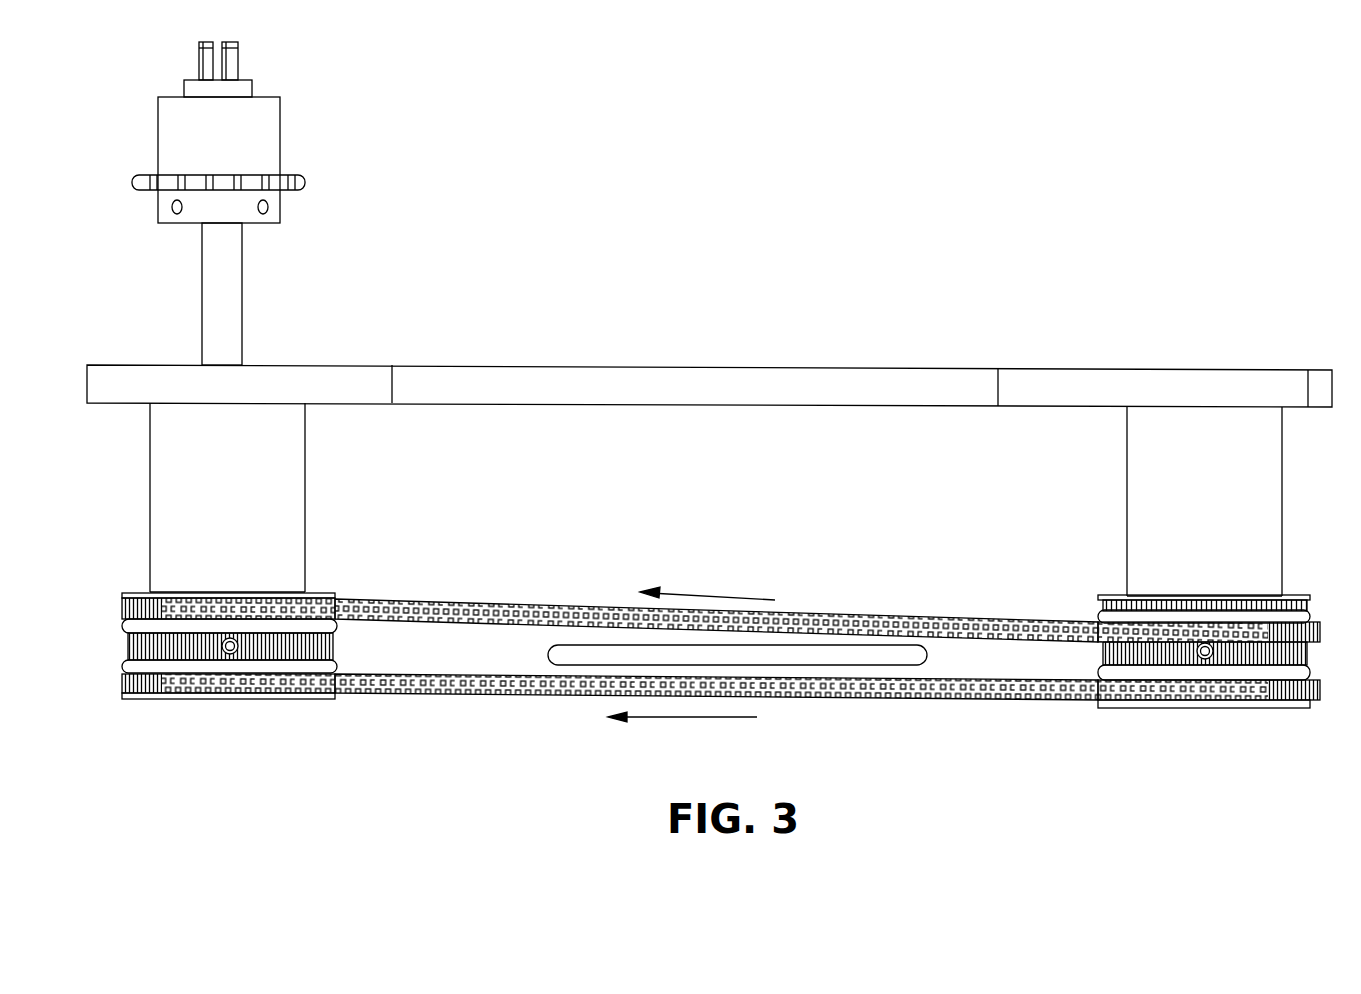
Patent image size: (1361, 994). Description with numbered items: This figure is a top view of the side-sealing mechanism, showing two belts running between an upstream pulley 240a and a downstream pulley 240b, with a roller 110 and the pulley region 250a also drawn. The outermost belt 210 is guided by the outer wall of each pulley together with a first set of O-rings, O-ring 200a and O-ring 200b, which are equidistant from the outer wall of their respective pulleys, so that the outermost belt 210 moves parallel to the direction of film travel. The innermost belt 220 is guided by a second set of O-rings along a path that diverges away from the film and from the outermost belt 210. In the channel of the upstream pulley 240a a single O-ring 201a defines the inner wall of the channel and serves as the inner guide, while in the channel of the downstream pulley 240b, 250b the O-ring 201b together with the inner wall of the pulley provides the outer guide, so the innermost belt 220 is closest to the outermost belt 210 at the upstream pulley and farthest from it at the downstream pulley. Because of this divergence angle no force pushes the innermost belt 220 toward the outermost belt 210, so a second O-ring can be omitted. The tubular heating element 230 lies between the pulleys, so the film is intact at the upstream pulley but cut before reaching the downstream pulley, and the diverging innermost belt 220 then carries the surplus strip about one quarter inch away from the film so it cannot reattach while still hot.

The drive roller 110 is at (327, 645).
The O-ring 200a is at (1313, 668).
The O-ring 200b is at (123, 662).
The O-ring 201a is at (1313, 617).
The O-ring 201b is at (123, 627).
The outermost belt 210 is at (390, 693).
The innermost belt 220 is at (887, 613).
The tubular heating element 230 is at (927, 657).
The upstream pulley 240a is at (1247, 709).
The downstream pulley 240b is at (152, 698).
The upper flange 250a is at (1113, 597).
The downstream pulley 250b is at (138, 592).